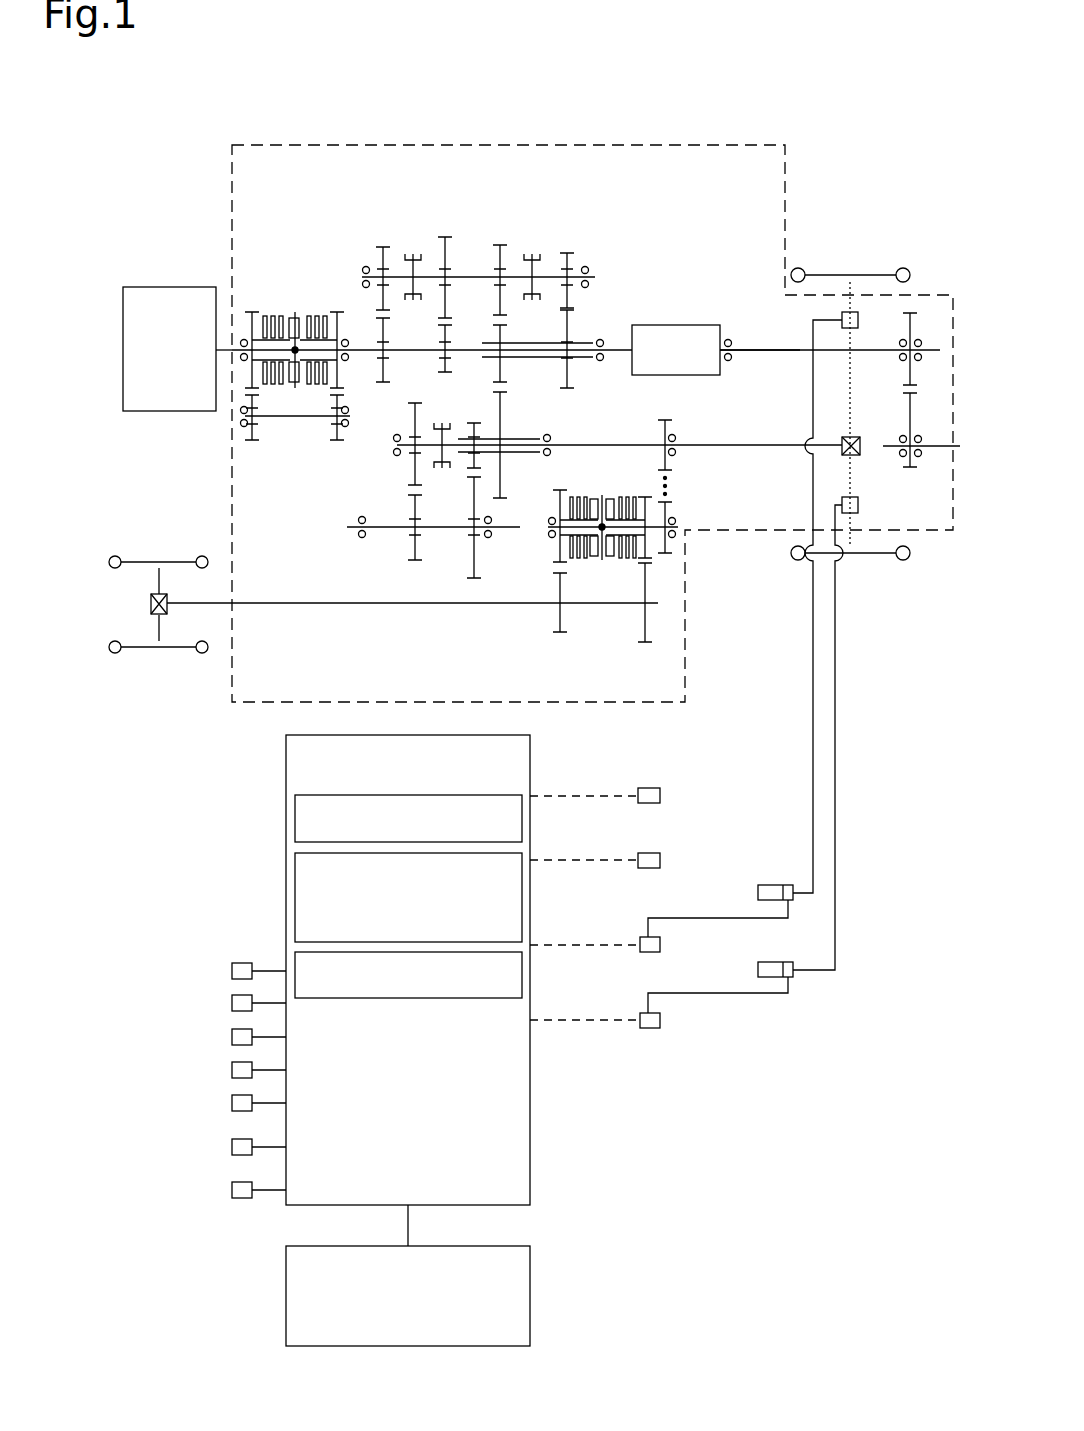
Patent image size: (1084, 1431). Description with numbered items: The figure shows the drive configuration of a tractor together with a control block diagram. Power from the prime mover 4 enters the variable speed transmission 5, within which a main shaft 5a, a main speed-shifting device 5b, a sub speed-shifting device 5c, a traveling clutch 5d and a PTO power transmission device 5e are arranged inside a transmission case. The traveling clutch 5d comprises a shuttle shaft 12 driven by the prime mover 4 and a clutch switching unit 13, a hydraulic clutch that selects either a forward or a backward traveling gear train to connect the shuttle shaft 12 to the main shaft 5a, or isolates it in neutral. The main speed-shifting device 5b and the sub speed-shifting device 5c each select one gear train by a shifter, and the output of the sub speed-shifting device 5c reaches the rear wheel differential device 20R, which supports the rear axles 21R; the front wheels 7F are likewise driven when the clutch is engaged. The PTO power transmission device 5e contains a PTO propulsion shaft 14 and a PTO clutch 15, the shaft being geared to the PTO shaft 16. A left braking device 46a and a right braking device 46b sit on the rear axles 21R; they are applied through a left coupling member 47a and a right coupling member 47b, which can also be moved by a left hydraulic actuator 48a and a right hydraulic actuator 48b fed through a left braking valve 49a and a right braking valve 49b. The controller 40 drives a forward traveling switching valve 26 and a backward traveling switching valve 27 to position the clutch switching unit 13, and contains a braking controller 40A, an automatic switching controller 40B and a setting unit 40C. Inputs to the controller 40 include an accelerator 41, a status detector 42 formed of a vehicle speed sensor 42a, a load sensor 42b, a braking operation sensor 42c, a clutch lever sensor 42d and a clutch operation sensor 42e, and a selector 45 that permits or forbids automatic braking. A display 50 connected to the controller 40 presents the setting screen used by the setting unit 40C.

The prime mover 4 is at (155, 287).
The variable speed transmission 5 is at (933, 292).
The main shaft 5a is at (613, 343).
The main speed-shifting device 5b is at (588, 240).
The sub speed-shifting device 5c is at (454, 551).
The traveling clutch 5d is at (297, 309).
The PTO power transmission device 5e is at (716, 301).
The front wheels 7F is at (112, 556).
The shuttle shaft 12 is at (258, 340).
The clutch switching unit 13 is at (326, 305).
The PTO propulsion shaft 14 is at (760, 309).
The PTO clutch 15 is at (700, 325).
The PTO shaft 16 is at (938, 428).
The rear wheel differential device 20R is at (842, 440).
The rear axles 21R is at (848, 377).
The forward traveling switching valve 26 is at (660, 797).
The backward traveling switching valve 27 is at (660, 862).
The controller 40 is at (359, 970).
The braking controller 40A is at (295, 819).
The automatic switching controller 40B is at (295, 877).
The setting unit 40C is at (295, 935).
The accelerator 41 is at (232, 971).
The status detector 42 is at (177, 1075).
The vehicle speed sensor 42a is at (232, 1003).
The load sensor 42b is at (232, 1037).
The braking operation sensor 42c is at (232, 1070).
The clutch lever sensor 42d is at (232, 1103).
The clutch operation sensor 42e is at (232, 1147).
The selector 45 is at (232, 1190).
The left braking device 46a is at (842, 497).
The right braking device 46b is at (843, 312).
The left coupling member 47a is at (835, 753).
The right coupling member 47b is at (813, 712).
The left hydraulic actuator 48a is at (768, 962).
The right hydraulic actuator 48b is at (768, 885).
The left braking valve 49a is at (645, 1013).
The right braking valve 49b is at (645, 937).
The display 50 is at (286, 1295).